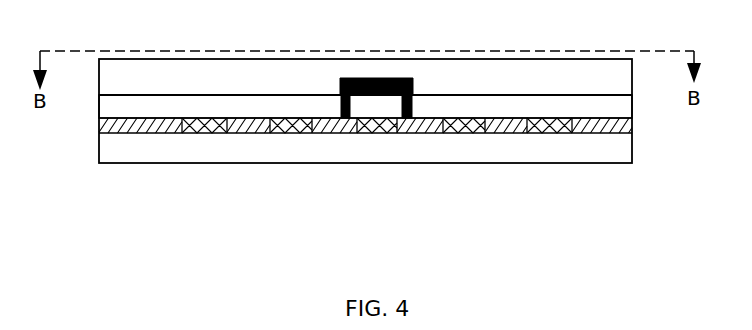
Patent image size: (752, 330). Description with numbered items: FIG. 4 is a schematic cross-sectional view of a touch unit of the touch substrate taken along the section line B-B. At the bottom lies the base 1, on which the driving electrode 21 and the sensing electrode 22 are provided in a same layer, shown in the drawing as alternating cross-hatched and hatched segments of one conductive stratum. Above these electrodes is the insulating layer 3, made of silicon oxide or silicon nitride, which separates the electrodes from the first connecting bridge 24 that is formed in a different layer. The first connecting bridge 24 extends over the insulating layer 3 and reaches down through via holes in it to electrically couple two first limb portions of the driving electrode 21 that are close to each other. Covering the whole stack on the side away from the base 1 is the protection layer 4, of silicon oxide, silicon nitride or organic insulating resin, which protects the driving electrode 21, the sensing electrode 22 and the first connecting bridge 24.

The base 1 is at (600, 150).
The insulating layer 3 is at (601, 110).
The protection layer 4 is at (500, 70).
The driving electrode 21 is at (492, 127).
The sensing electrode 22 is at (377, 127).
The first connecting bridge 24 is at (377, 78).